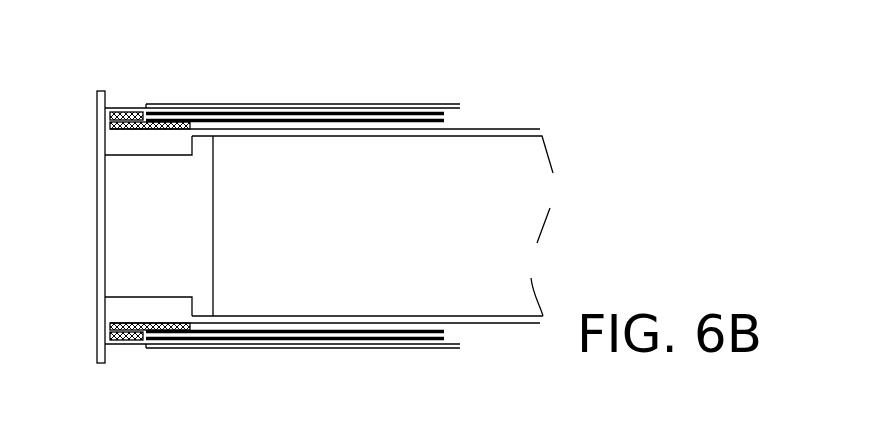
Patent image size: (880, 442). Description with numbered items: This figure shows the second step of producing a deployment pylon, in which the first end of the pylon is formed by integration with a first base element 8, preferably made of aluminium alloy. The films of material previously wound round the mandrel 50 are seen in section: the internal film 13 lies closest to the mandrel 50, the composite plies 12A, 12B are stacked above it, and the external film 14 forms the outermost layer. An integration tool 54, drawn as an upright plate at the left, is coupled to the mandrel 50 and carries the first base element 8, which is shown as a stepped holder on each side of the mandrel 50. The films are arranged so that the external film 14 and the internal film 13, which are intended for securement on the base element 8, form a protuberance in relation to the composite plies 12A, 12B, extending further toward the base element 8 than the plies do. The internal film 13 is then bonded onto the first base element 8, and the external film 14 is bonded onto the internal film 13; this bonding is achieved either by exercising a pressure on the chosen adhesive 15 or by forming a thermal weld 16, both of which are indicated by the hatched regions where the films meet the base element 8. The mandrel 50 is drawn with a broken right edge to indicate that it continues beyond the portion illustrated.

The first base element 8 is at (110, 150).
The composite ply 12A is at (255, 112).
The composite ply 12B is at (390, 110).
The internal film 13 is at (127, 112).
The external film 14 is at (205, 104).
The adhesive 15 is at (137, 348).
The thermal weld 16 is at (119, 340).
The mandrel 50 is at (463, 152).
The integration tool 54 is at (102, 267).